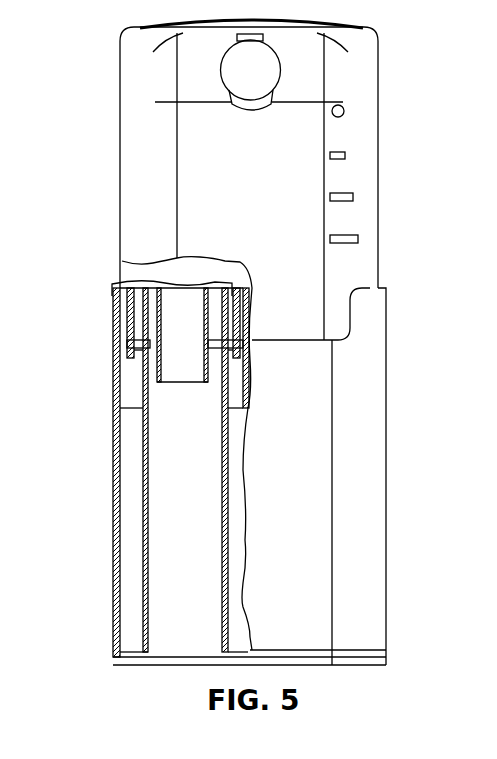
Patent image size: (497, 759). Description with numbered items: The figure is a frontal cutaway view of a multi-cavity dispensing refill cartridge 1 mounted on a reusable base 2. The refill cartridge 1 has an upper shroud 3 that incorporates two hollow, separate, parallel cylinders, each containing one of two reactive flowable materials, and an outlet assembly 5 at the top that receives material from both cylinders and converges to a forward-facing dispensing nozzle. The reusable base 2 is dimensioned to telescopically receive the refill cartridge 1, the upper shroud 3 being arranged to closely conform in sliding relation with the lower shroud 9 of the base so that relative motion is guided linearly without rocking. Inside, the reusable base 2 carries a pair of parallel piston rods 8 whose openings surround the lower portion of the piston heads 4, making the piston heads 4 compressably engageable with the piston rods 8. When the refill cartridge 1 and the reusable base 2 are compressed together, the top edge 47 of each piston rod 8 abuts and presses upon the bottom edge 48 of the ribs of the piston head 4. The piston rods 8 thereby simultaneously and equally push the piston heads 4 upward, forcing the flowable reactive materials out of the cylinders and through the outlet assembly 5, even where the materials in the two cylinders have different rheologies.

The refill cartridge 1 is at (388, 107).
The reusable base 2 is at (392, 469).
The upper shroud 3 is at (120, 110).
The piston head 4 is at (127, 286).
The outlet assembly 5 is at (310, 78).
The piston rod 8 is at (142, 463).
The lower shroud 9 is at (114, 572).
The top edge of piston rod 47 is at (150, 335).
The bottom edge of piston head ribs 48 is at (243, 345).